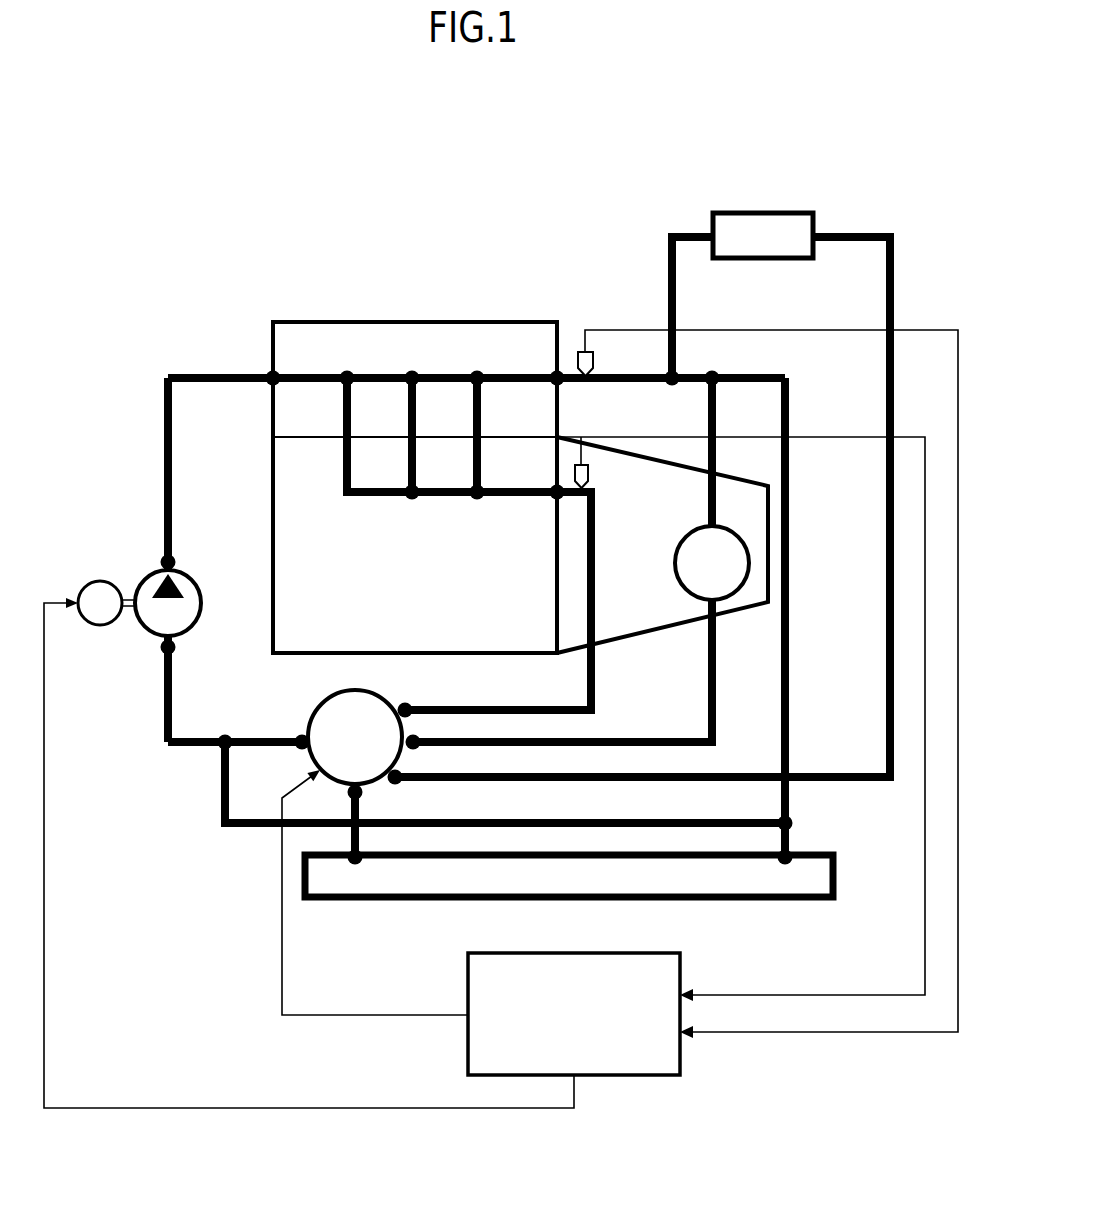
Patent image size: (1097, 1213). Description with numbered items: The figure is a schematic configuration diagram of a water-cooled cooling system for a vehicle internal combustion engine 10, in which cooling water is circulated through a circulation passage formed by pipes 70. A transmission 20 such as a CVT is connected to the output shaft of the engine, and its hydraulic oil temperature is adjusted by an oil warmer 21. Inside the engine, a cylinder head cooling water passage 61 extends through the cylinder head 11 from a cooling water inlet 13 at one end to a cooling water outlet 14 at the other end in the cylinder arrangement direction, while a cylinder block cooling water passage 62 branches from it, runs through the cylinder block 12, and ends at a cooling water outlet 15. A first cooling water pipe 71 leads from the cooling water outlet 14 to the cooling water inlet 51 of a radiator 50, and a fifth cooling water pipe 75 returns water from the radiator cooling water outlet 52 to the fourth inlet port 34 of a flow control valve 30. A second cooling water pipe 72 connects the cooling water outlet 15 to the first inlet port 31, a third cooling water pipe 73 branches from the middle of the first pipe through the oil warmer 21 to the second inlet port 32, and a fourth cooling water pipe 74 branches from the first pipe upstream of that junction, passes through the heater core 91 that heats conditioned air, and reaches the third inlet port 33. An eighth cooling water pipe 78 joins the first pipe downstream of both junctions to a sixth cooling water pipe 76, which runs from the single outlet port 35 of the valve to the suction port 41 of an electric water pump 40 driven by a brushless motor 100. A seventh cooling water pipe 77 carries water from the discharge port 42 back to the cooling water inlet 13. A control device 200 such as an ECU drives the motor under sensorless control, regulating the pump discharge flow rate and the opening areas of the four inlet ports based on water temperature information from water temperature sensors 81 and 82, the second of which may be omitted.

The internal combustion engine 10 is at (248, 302).
The cylinder head 11 is at (283, 348).
The cylinder block 12 is at (278, 520).
The cooling water inlet 13 is at (270, 382).
The cooling water outlet 14 is at (558, 372).
The cooling water outlet 15 is at (553, 490).
The transmission 20 is at (742, 490).
The oil warmer 21 is at (708, 526).
The flow control valve 30 is at (352, 690).
The first inlet port 31 is at (405, 703).
The second inlet port 32 is at (420, 744).
The third inlet port 33 is at (402, 777).
The fourth inlet port 34 is at (365, 792).
The outlet port 35 is at (300, 736).
The electric water pump 40 is at (148, 630).
The suction port 41 is at (176, 648).
The discharge port 42 is at (164, 558).
The radiator 50 is at (722, 898).
The cooling water inlet 51 is at (793, 857).
The cooling water outlet 52 is at (358, 862).
The cylinder head cooling water passage 61 is at (347, 375).
The cylinder block cooling water passage 62 is at (347, 495).
The pipes 70 is at (805, 340).
The first cooling water pipe 71 is at (788, 412).
The second cooling water pipe 72 is at (588, 570).
The third cooling water pipe 73 is at (708, 428).
The fourth cooling water pipe 74 is at (893, 275).
The fifth cooling water pipe 75 is at (350, 826).
The sixth cooling water pipe 76 is at (168, 745).
The seventh cooling water pipe 77 is at (168, 375).
The eighth cooling water pipe 78 is at (745, 823).
The water temperature sensor 81 is at (596, 360).
The water temperature sensor 82 is at (590, 478).
The heater core 91 is at (773, 213).
The brushless motor 100 is at (100, 581).
The control device 200 is at (490, 953).